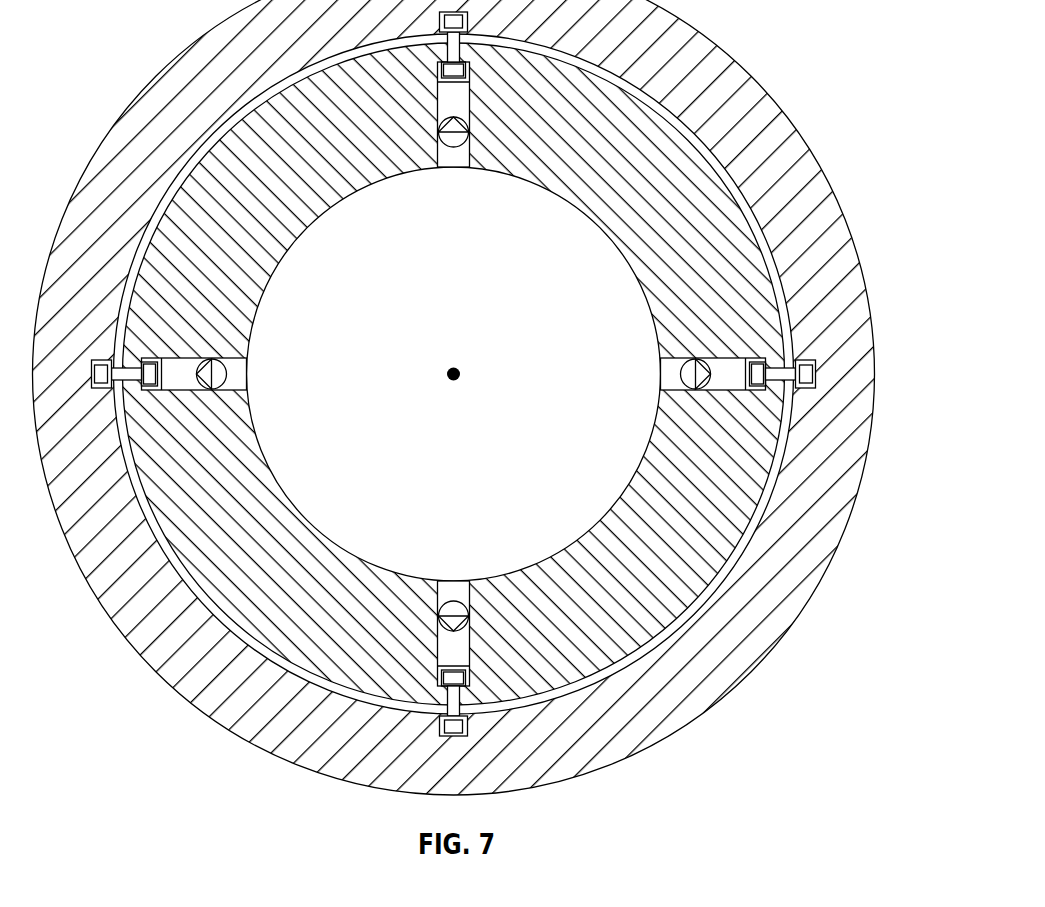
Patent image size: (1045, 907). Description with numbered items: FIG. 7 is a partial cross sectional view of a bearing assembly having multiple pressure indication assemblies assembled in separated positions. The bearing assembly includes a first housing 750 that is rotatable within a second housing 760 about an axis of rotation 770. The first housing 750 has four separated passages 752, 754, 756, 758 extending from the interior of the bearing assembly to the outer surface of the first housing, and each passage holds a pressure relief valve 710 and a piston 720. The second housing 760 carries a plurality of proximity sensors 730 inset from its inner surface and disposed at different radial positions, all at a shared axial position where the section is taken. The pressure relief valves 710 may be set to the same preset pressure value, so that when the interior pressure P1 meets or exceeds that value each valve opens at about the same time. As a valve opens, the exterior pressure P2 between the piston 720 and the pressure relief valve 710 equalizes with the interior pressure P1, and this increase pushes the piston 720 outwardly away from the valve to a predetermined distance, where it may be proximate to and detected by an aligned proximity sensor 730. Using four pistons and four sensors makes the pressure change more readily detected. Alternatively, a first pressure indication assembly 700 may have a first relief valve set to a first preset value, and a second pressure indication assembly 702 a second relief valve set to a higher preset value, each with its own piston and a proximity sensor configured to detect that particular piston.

The first pressure indication assembly 700 is at (755, 375).
The second pressure indication assembly 702 is at (457, 175).
The pressure relief valve 710 is at (681, 371).
The piston 720 is at (757, 359).
The proximity sensor 730 is at (817, 374).
The first housing 750 is at (712, 516).
The passage 752 is at (181, 358).
The passage 754 is at (438, 643).
The passage 756 is at (721, 391).
The passage 758 is at (438, 106).
The second housing 760 is at (805, 592).
The axis of rotation 770 is at (451, 369).
The interior pressure P1 is at (233, 358).
The exterior pressure P2 is at (187, 391).